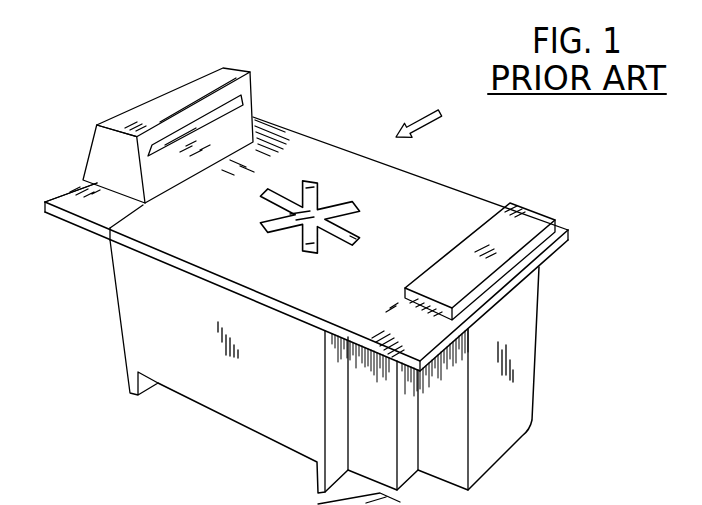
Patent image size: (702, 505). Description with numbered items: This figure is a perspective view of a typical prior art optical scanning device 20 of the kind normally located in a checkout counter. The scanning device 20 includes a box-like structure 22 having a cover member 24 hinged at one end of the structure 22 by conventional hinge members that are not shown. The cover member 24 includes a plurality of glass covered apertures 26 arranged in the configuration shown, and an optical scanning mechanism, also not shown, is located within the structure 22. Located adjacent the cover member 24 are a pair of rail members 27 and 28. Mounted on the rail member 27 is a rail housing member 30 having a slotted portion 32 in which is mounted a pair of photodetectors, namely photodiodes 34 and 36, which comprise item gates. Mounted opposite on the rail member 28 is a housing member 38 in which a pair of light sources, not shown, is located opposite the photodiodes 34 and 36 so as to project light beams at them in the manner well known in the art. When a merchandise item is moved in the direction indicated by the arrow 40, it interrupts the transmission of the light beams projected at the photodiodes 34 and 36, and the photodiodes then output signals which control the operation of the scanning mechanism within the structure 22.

The scanning device 20 is at (476, 163).
The box-like structure 22 is at (538, 314).
The cover member 24 is at (307, 148).
The glass covered apertures 26 is at (313, 180).
The rail member 27 is at (65, 195).
The rail member 28 is at (391, 318).
The rail housing member 30 is at (92, 157).
The slotted portion 32 is at (200, 112).
The photodiode 34 is at (237, 110).
The photodiode 36 is at (167, 140).
The housing member 38 is at (528, 222).
The arrow 40 is at (433, 112).